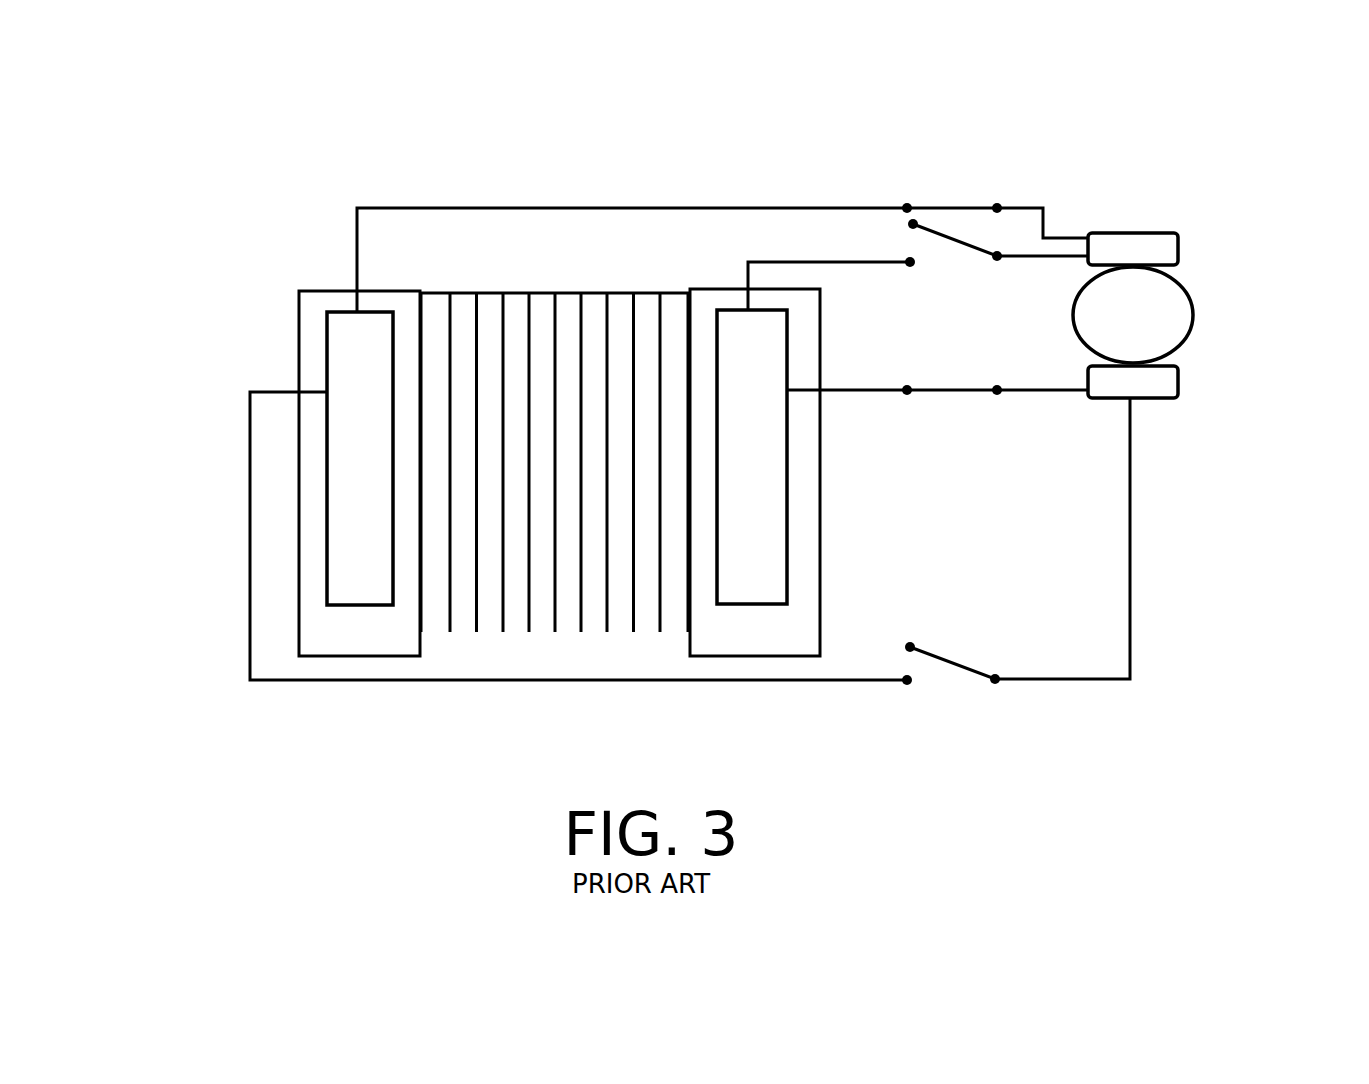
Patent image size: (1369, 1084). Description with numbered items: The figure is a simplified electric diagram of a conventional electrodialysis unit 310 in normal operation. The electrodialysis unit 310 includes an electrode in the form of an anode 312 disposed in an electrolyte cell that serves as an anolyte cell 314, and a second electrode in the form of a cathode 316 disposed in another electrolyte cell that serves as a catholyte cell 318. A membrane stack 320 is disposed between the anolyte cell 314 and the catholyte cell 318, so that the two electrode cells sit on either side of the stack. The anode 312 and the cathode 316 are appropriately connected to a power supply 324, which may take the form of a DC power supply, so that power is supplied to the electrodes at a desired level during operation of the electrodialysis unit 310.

The electrodialysis unit 310 is at (265, 256).
The anode 312 is at (344, 312).
The anolyte cell 314 is at (320, 634).
The cathode 316 is at (770, 568).
The catholyte cell 318 is at (800, 480).
The membrane stack 320 is at (564, 290).
The power supply 324 is at (1187, 288).